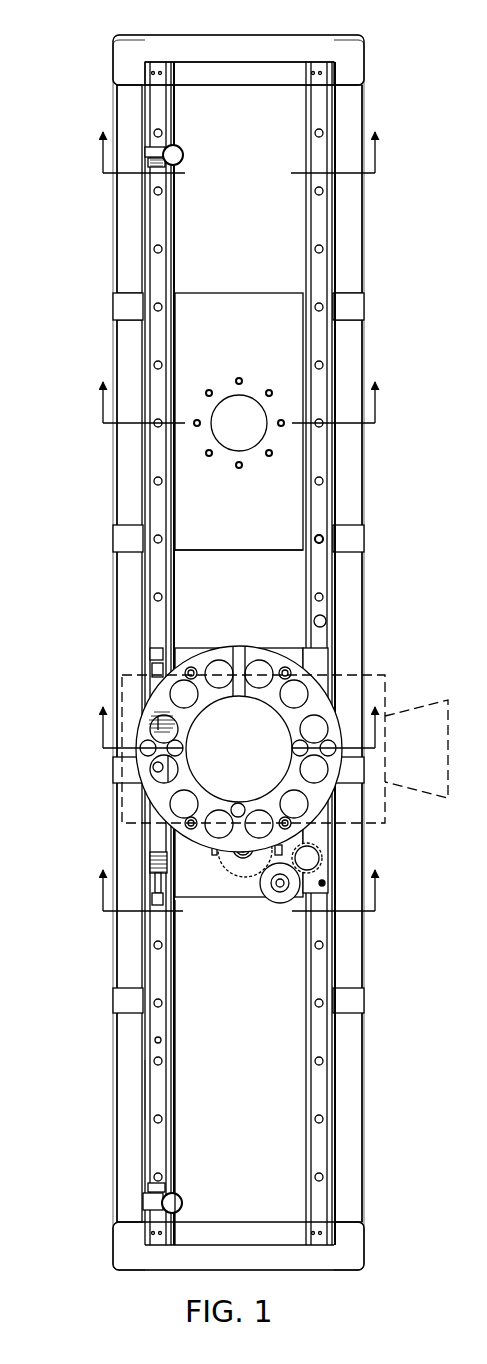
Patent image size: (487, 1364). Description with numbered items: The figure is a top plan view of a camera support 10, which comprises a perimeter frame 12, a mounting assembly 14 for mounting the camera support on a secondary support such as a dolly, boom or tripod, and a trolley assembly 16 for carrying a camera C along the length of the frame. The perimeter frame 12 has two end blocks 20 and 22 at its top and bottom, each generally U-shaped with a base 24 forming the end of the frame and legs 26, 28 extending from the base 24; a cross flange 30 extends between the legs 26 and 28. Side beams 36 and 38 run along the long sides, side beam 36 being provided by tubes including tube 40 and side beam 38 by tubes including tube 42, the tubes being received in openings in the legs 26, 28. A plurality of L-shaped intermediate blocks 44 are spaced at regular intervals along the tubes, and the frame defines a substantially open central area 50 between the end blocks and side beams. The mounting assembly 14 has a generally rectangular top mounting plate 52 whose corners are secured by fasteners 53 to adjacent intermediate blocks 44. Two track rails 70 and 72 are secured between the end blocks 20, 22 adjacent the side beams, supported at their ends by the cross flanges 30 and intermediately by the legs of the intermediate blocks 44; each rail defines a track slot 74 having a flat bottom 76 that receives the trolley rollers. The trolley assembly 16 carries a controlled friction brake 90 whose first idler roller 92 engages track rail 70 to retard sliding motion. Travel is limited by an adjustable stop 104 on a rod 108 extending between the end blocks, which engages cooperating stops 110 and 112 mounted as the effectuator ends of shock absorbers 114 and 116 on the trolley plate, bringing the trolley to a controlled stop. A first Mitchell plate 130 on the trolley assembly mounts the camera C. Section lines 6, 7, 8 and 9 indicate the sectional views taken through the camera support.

The camera support 10 is at (83, 243).
The perimeter frame 12 is at (366, 236).
The mounting assembly 14 is at (193, 481).
The trolley assembly 16 is at (208, 905).
The end block 20 is at (263, 50).
The end block 22 is at (280, 1262).
The base 24 is at (200, 50).
The leg 26 is at (354, 76).
The leg 28 is at (122, 71).
The cross flange 30 is at (237, 77).
The side beam 36 is at (352, 350).
The side beam 38 is at (128, 349).
The tube 40 is at (352, 120).
The tube 42 is at (128, 109).
The intermediate block 44 is at (122, 306).
The central area 50 is at (262, 998).
The top mounting plate 52 is at (238, 537).
The fastener 53 is at (312, 526).
The track rail 70 is at (318, 578).
The track rail 72 is at (158, 573).
The track slot 74 is at (325, 626).
The flat bottom 76 is at (155, 1087).
The controlled friction brake 90 is at (235, 880).
The first idler roller 92 is at (283, 900).
The adjustable stop 104 is at (158, 1187).
The rod 108 is at (175, 1093).
The cooperating stop 110 is at (155, 890).
The cooperating stop 112 is at (163, 650).
The shock absorber 114 is at (161, 870).
The shock absorber 116 is at (155, 670).
The first Mitchell plate 130 is at (160, 795).
The camera C is at (385, 808).
The section line 6- 6 is at (238, 417).
The section line 7- 7 is at (238, 905).
The section line 8- 8 is at (237, 745).
The section line 9- 9 is at (238, 166).